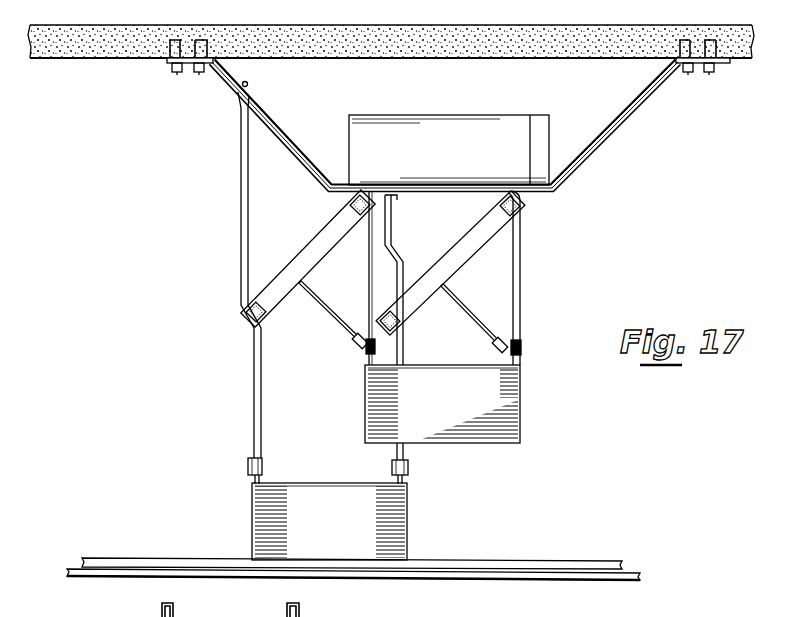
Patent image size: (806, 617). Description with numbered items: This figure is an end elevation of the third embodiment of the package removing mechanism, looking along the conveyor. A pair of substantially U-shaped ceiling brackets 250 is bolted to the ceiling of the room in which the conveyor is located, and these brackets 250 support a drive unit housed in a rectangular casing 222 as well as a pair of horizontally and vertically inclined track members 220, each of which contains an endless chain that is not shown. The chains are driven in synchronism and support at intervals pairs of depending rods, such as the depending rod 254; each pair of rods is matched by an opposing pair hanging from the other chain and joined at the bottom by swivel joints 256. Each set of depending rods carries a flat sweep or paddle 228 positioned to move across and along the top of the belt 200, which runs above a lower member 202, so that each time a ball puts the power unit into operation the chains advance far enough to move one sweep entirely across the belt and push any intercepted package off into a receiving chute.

The belt 200 is at (520, 562).
The lower plate / rail 202 is at (630, 578).
The track member 220 is at (352, 212).
The rectangular casing 222 is at (493, 98).
The flat sweep or paddle 228 is at (402, 492).
The ceiling bracket 250 is at (632, 118).
The depending rod 254 is at (255, 378).
The swivel joint 256 is at (355, 350).